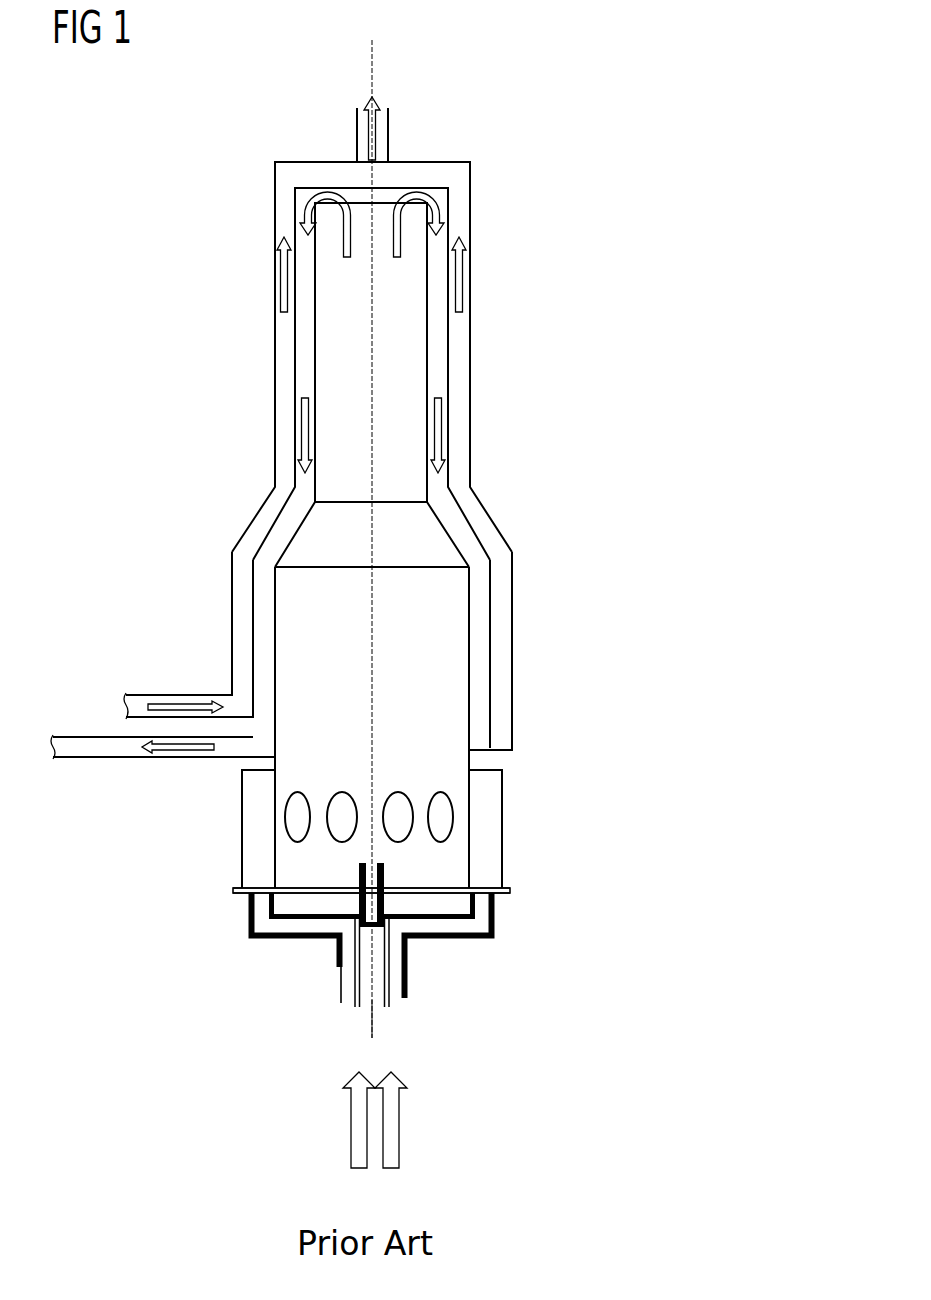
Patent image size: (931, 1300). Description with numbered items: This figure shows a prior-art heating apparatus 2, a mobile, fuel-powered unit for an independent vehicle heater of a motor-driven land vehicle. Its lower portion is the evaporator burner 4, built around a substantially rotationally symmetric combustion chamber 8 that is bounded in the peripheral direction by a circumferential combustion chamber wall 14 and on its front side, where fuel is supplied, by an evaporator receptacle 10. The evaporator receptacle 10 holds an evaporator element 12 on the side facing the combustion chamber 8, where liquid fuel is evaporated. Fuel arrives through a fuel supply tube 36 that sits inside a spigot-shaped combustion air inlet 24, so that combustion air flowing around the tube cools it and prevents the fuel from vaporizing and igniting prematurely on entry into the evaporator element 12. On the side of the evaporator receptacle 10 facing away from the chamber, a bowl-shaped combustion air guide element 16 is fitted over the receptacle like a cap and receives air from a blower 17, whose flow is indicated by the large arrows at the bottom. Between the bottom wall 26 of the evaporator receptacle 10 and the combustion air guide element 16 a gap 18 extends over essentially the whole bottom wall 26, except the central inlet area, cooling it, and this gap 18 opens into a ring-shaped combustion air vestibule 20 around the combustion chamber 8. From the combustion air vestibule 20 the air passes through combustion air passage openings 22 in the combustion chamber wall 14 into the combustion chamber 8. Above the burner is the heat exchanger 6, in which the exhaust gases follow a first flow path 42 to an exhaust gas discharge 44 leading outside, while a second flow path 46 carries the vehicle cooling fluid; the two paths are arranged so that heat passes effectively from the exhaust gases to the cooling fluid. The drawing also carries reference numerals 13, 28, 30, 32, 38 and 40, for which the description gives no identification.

The heating apparatus 2 is at (487, 122).
The evaporator burner 4 is at (567, 752).
The heat exchanger 6 is at (483, 391).
The combustion chamber 8 is at (455, 617).
The evaporator receptacle 10 is at (417, 907).
The evaporator element 12 is at (443, 902).
The central axis 13 is at (374, 595).
The combustion chamber wall 14 is at (470, 660).
The combustion air guide element 16 is at (496, 905).
The blower 17 is at (403, 1113).
The gap 18 is at (467, 926).
The combustion air vestibule 20 is at (485, 800).
The combustion air passage openings 22 is at (337, 789).
The combustion air inlet 24 is at (408, 952).
The bottom wall 26 is at (283, 920).
The central feed channel 28 is at (398, 988).
The flange 30 is at (255, 898).
The plate 32 is at (485, 887).
The fuel supply tube 36 is at (355, 990).
The central tube 38 is at (363, 878).
The inner tube 40 is at (410, 328).
The first flow path 42 is at (305, 380).
The exhaust gas discharge 44 is at (82, 758).
The second flow path 46 is at (286, 452).